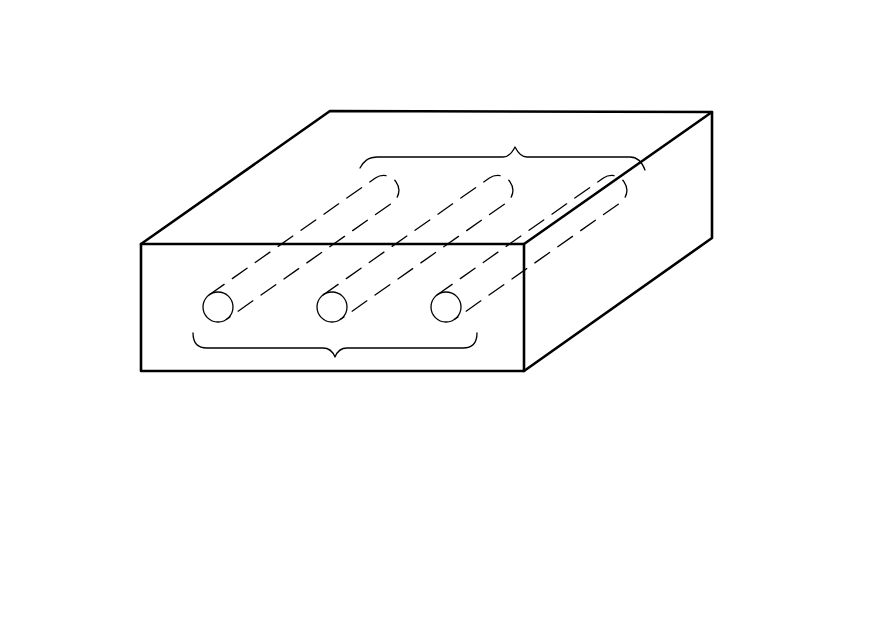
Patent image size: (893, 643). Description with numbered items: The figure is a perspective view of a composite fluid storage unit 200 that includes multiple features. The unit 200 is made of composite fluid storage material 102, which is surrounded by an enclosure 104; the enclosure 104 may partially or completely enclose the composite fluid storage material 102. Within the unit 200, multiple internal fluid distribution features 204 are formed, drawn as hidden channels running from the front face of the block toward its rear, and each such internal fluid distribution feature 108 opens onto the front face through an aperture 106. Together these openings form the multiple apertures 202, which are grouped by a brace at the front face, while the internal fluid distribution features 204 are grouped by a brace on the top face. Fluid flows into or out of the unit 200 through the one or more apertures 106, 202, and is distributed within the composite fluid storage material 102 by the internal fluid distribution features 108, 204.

The unit 200 is at (148, 87).
The composite fluid storage material 102 is at (600, 130).
The enclosure 104 is at (705, 181).
The aperture 106 is at (445, 306).
The internal fluid distribution feature 108 is at (525, 232).
The multiple apertures 202 is at (335, 357).
The multiple internal fluid distribution features 204 is at (515, 147).